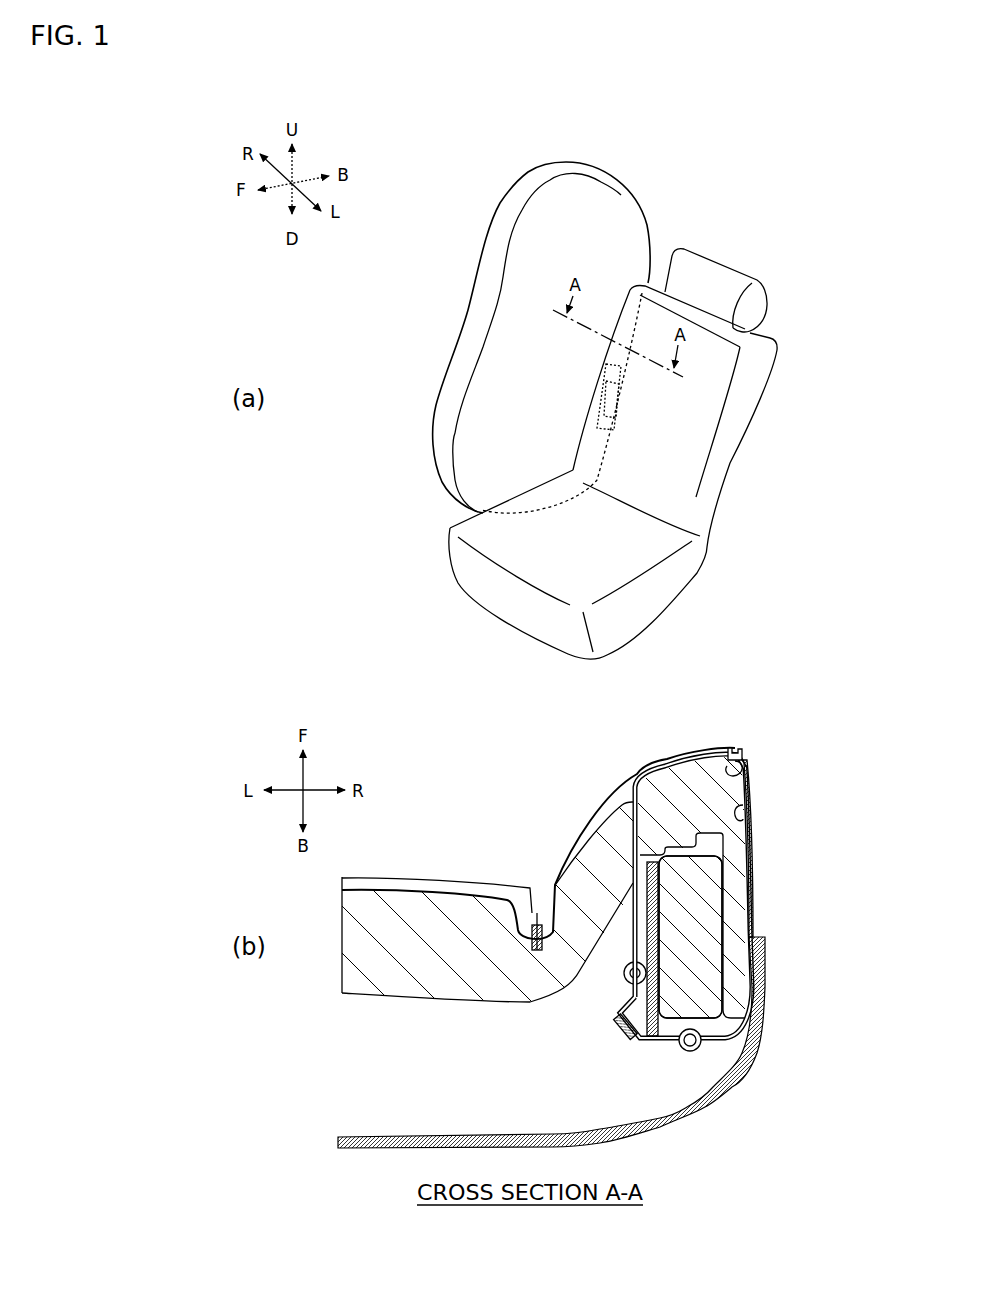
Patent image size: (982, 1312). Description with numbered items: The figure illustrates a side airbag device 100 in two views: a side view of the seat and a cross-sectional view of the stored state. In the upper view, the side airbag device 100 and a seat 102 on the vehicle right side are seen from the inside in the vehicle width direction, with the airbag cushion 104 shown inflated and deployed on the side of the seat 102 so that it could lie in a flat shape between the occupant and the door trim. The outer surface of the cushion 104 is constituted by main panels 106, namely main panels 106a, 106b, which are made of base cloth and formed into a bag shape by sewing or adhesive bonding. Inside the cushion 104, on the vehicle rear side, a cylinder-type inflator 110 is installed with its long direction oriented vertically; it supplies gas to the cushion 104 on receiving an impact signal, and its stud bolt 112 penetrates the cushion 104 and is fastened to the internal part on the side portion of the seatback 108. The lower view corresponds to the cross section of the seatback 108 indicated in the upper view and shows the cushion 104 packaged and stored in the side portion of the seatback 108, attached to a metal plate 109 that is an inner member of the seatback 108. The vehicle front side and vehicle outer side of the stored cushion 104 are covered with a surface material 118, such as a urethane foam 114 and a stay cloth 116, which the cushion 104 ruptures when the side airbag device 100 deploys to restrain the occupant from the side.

The side airbag device 100 is at (684, 174).
The seat 102 is at (768, 281).
The airbag cushion 104 is at (579, 639).
The main panels 106 is at (498, 337).
The main panel 106a is at (511, 301).
The main panel 106b is at (478, 247).
The seatback 108 is at (765, 397).
The metal plate 109 is at (623, 1015).
The inflator 110 is at (628, 390).
The stud bolt 112 is at (632, 420).
The urethane foam 114 is at (679, 790).
The stay cloth 116 is at (633, 948).
The surface material 118 is at (750, 807).